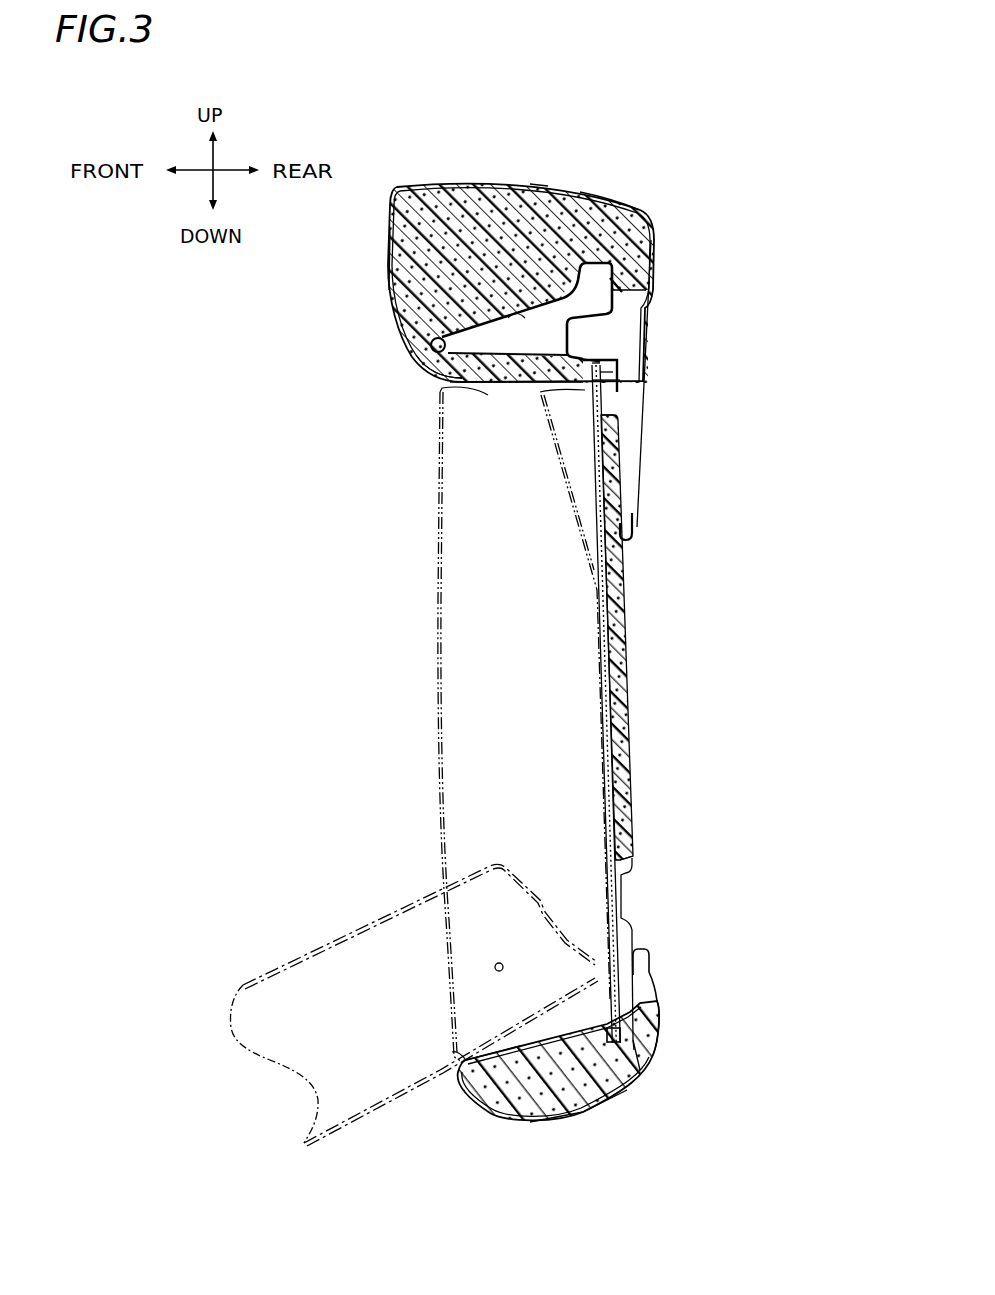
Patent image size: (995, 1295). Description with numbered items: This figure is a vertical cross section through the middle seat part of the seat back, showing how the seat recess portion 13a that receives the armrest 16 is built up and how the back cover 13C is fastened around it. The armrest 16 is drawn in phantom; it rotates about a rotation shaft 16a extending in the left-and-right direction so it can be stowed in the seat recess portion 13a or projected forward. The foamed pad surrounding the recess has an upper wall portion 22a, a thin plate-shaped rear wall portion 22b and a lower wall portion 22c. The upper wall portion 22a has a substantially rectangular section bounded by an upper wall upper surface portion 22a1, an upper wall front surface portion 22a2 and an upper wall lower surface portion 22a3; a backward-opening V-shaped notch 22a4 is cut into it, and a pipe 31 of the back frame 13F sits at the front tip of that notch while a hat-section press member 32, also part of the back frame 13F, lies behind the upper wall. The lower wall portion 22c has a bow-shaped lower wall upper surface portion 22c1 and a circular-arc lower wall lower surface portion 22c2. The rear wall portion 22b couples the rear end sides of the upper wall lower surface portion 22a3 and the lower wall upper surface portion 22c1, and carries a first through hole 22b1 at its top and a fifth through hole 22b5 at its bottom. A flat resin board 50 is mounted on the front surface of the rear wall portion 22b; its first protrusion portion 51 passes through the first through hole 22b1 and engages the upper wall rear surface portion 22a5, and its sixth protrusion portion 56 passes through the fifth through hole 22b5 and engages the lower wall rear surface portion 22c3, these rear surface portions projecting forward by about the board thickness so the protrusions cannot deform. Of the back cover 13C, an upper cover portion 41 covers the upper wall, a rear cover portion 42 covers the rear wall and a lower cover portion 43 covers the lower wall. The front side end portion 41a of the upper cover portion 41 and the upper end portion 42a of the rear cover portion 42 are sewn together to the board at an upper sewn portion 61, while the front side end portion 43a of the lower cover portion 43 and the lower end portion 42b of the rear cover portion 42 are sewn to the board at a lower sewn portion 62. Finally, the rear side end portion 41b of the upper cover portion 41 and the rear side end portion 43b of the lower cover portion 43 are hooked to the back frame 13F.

The seat recess portion 13a is at (600, 723).
The back cover 13C is at (638, 211).
The back frame 13F is at (627, 895).
The armrest 16 is at (334, 936).
The rotation shaft 16a is at (496, 963).
The upper wall portion 22a is at (410, 217).
The upper wall upper surface portion 22a1 is at (591, 200).
The upper wall front surface portion 22a2 is at (388, 270).
The upper wall lower surface portion 22a3 is at (443, 397).
The V-shaped notch 22a4 is at (522, 318).
The upper wall rear surface portion 22a5 is at (593, 362).
The rear wall portion 22b is at (622, 666).
The first through hole 22b1 is at (616, 420).
The fifth through hole 22b5 is at (632, 858).
The lower wall portion 22c is at (601, 1116).
The lower wall upper surface portion 22c1 is at (560, 1050).
The lower wall lower surface portion 22c2 is at (558, 1121).
The lower wall rear surface portion 22c3 is at (652, 1053).
The pipe 31 is at (432, 368).
The press member 32 is at (600, 383).
The upper cover portion 41 is at (395, 298).
The front side end portion 41a is at (594, 363).
The rear side end portion 41b is at (636, 523).
The rear cover portion 42 is at (596, 532).
The upper end portion 42a is at (596, 365).
The lower end portion 42b is at (641, 1070).
The lower cover portion 43 is at (597, 1020).
The front side end portion 43a is at (612, 1090).
The rear side end portion 43b is at (651, 958).
The board 50 is at (624, 945).
The first protrusion portion 51 is at (604, 368).
The sixth protrusion portion 56 is at (636, 1044).
The upper sewn portion 61 is at (612, 373).
The lower sewn portion 62 is at (621, 1032).